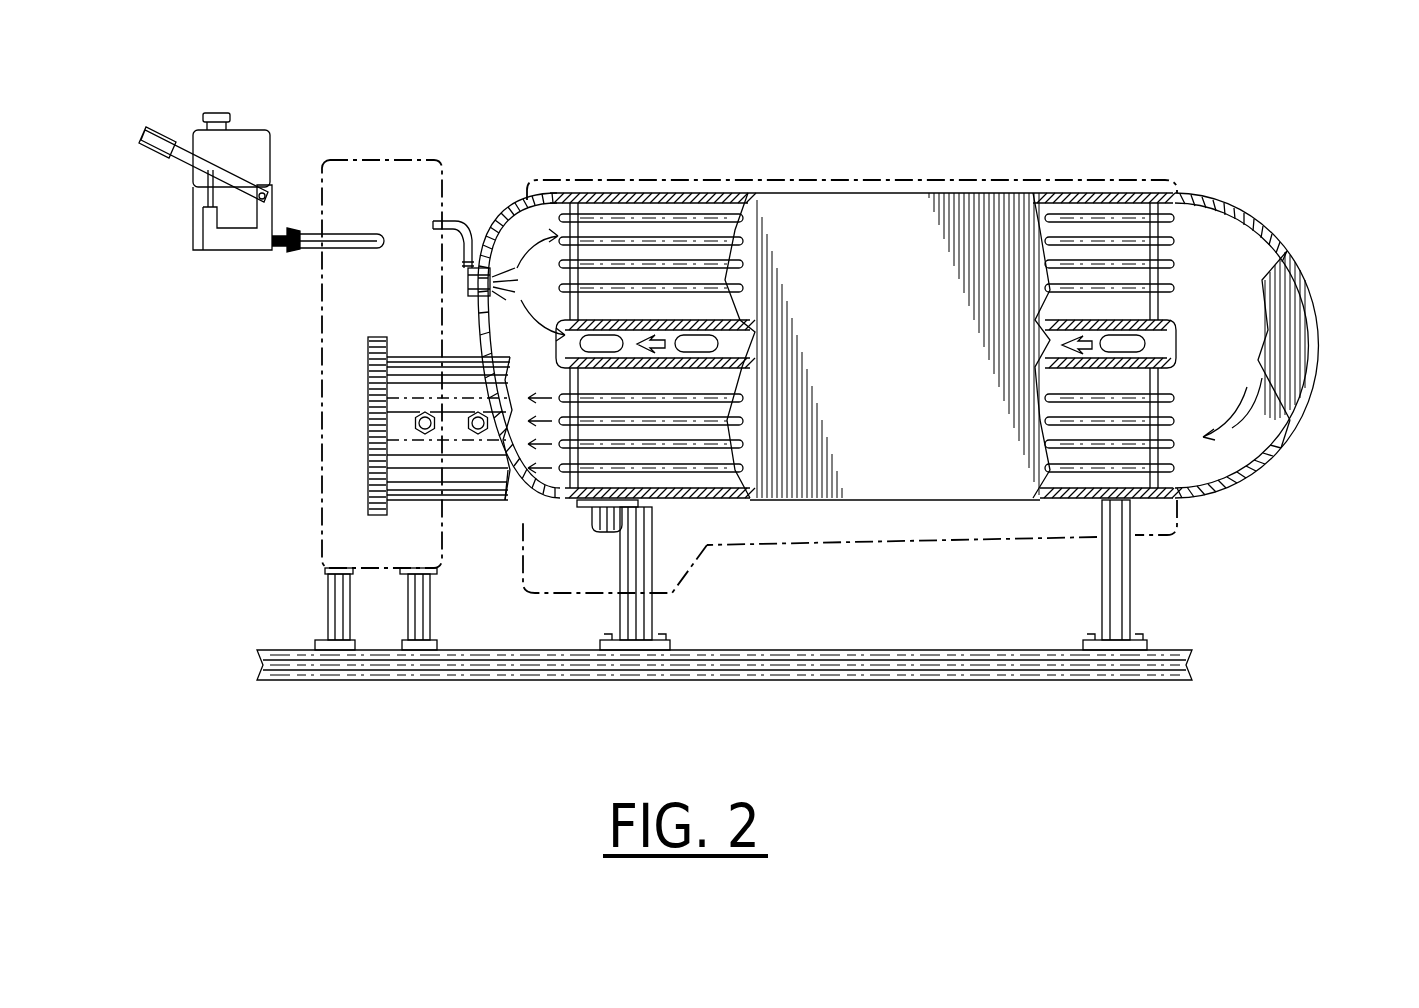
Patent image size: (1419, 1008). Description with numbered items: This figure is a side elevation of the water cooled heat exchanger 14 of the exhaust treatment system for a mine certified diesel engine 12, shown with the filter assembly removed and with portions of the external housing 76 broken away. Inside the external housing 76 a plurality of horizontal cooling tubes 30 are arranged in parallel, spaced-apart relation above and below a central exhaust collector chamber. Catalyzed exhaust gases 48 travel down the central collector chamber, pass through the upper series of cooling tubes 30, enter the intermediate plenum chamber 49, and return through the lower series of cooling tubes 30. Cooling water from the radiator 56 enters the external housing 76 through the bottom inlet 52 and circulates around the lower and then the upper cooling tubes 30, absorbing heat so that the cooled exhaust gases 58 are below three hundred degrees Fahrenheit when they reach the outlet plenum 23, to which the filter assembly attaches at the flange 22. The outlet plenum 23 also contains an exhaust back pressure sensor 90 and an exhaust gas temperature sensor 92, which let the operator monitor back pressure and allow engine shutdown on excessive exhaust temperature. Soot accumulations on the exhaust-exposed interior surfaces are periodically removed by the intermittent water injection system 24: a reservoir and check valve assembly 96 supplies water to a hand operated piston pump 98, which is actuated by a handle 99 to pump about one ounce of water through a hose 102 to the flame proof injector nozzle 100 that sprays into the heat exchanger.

The diesel engine 12 is at (902, 171).
The heat exchanger 14 is at (1328, 304).
The flange 22 is at (368, 502).
The outlet plenum 23 is at (527, 490).
The water injection system 24 is at (311, 260).
The cooling tubes 30 is at (725, 296).
The catalyzed exhaust gases 48 is at (1060, 345).
The intermediate plenum chamber 49 is at (1245, 282).
The bottom inlet 52 is at (593, 525).
The radiator 56 is at (428, 160).
The cooled exhaust gases 58 is at (545, 507).
The external housing 76 is at (1285, 447).
The exhaust back pressure sensor 90 is at (420, 432).
The exhaust gas temperature sensor 92 is at (470, 418).
The reservoir and check valve assembly 96 is at (255, 130).
The hand operated piston pump 98 is at (205, 250).
The handle 99 is at (170, 160).
The flame proof injector nozzle 100 is at (466, 283).
The hose 102 is at (456, 215).